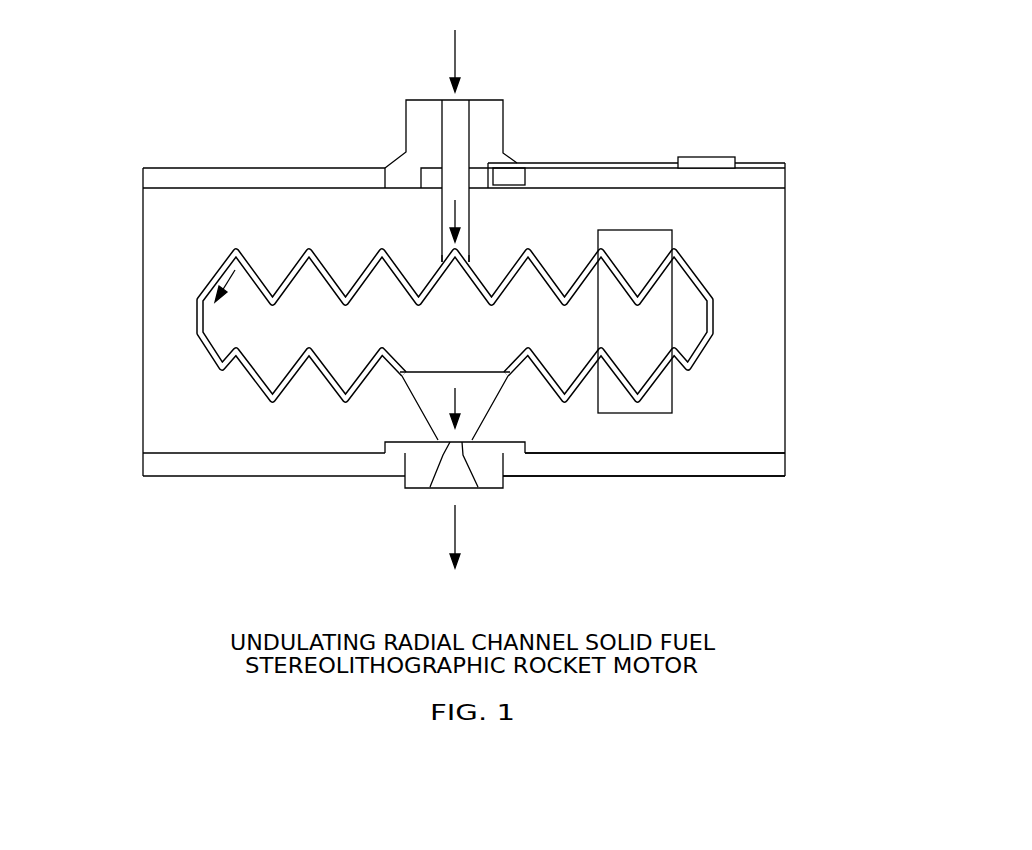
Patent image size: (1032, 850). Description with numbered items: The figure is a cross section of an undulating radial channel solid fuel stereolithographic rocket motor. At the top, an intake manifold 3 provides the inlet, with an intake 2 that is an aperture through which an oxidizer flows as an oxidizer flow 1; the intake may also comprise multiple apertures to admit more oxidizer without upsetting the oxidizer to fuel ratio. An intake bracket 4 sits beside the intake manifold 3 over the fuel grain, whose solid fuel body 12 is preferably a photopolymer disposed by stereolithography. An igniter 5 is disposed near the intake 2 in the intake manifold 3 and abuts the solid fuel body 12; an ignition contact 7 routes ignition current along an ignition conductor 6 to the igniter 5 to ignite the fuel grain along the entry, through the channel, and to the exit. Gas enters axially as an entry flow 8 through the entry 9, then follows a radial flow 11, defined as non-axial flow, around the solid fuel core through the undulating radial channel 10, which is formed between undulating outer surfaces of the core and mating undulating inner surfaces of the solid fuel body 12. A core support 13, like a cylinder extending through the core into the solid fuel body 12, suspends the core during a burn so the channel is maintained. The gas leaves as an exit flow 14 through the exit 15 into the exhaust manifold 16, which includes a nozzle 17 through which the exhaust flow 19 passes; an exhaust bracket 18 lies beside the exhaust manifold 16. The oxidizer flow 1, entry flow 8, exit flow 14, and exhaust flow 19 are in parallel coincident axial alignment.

The oxidizer flow 1 is at (453, 52).
The intake 2 is at (472, 100).
The intake manifold 3 is at (488, 100).
The intake bracket 4 is at (368, 168).
The igniter 5 is at (477, 165).
The ignition conductor 6 is at (627, 162).
The ignition contact 7 is at (737, 163).
The entry flow 8 is at (455, 215).
The entry 9 is at (470, 238).
The undulating radial channel 10 is at (380, 253).
The radial flow 11 is at (210, 290).
The solid fuel body 12 is at (785, 207).
The core support 13 is at (672, 390).
The exit flow 14 is at (445, 405).
The exit 15 is at (478, 430).
The exhaust manifold 16 is at (400, 478).
The nozzle 17 is at (457, 490).
The exhaust bracket 18 is at (607, 478).
The exhaust flow 19 is at (445, 535).